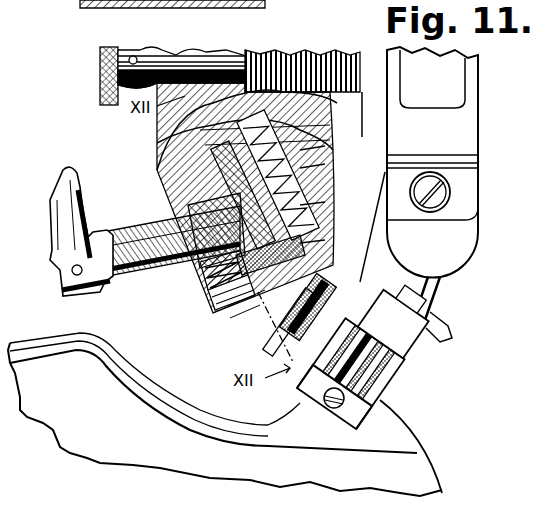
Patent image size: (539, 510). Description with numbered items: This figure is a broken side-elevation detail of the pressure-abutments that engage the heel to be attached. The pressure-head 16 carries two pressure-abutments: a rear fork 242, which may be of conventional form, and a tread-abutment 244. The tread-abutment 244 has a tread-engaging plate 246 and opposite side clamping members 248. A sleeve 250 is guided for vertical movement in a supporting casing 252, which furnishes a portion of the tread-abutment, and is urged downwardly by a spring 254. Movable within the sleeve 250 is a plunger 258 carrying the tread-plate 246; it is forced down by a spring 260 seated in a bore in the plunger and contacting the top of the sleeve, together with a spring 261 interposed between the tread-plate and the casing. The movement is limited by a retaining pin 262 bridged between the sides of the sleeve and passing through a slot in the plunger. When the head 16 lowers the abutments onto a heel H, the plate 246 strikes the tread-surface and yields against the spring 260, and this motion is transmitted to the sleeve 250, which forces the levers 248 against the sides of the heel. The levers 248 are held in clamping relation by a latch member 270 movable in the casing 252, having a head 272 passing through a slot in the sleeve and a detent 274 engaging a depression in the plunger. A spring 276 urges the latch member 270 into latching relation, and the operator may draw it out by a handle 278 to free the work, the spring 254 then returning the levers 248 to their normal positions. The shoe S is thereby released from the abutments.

The pressure-head 16 is at (182, 58).
The rear fork 242 is at (397, 370).
The tread-abutment 244 is at (266, 303).
The tread-engaging plate 246 is at (316, 238).
The side clamping members 248 is at (350, 288).
The sleeve 250 is at (316, 180).
The supporting casing 252 is at (362, 129).
The spring 254 is at (316, 144).
The plunger 258 is at (316, 199).
The spring 260 is at (316, 162).
The spring 261 is at (212, 298).
The retaining pin 262 is at (316, 218).
The latch member 270 is at (130, 283).
The latch head 272 is at (197, 273).
The detent 274 is at (207, 280).
The spring 276 is at (180, 222).
The handle 278 is at (65, 182).
The heel H is at (397, 417).
The seat S is at (442, 483).